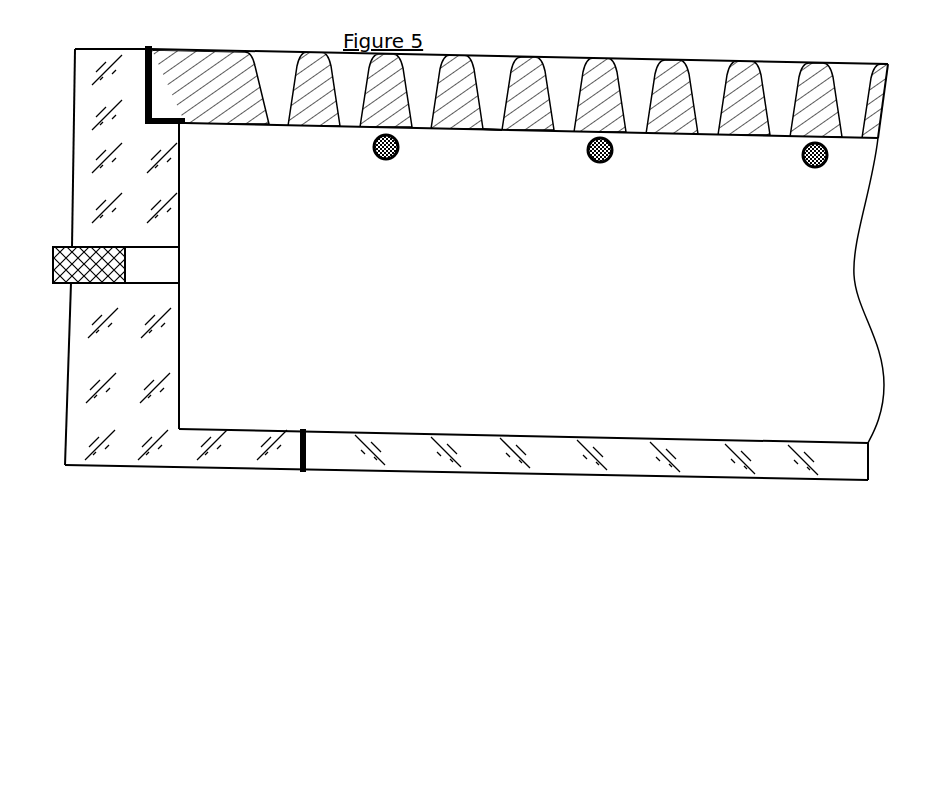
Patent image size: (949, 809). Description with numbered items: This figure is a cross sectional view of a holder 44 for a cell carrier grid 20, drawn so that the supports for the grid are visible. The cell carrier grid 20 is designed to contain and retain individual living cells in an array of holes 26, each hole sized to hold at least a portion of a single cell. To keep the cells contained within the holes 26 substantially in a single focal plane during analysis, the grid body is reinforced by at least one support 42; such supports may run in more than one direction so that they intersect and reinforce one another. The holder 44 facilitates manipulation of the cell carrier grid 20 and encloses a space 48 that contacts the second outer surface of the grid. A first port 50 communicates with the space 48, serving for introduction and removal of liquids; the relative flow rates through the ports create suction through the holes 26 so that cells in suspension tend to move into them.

The cell carrier grid 20 is at (663, 115).
The holes 26 is at (492, 110).
The support 42 is at (392, 158).
The holder 44 is at (536, 83).
The space 48 is at (468, 195).
The first port 50 is at (80, 268).